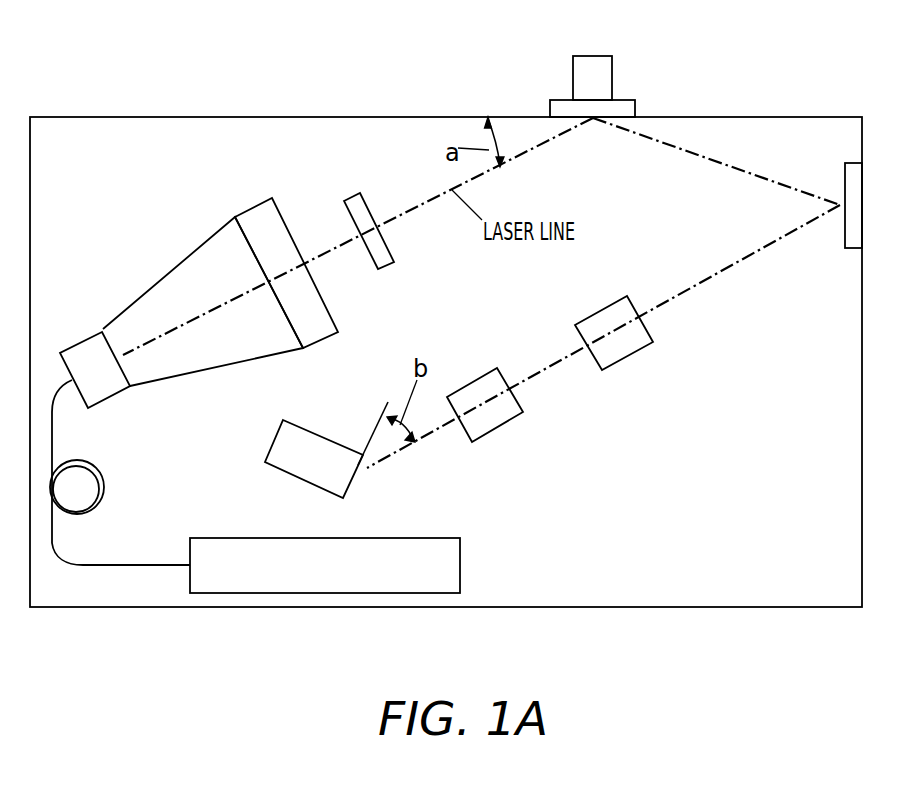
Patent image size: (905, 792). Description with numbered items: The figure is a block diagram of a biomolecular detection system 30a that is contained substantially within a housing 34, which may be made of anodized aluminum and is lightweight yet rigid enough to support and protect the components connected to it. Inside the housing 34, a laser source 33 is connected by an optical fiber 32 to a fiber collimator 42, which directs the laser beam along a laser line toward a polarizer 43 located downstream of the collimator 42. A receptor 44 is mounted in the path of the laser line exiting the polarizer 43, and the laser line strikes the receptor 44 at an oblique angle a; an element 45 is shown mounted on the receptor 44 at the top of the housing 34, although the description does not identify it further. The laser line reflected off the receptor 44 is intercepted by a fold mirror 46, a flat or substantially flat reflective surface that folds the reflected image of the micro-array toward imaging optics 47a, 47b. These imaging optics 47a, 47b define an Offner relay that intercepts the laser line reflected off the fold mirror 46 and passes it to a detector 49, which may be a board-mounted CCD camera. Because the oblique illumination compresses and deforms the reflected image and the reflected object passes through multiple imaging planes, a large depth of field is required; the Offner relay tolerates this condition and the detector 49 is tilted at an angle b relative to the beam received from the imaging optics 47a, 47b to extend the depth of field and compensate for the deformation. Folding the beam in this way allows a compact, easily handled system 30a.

The biomolecular detection system 30a is at (212, 630).
The optical fiber 32 is at (130, 563).
The laser source 33 is at (460, 566).
The housing 34 is at (282, 117).
The fiber collimator 42 is at (215, 368).
The polarizer 43 is at (388, 265).
The receptor 44 is at (550, 108).
The detector 45 is at (612, 77).
The fold mirror 46 is at (855, 248).
The imaging optics 47a is at (628, 357).
The imaging optics 47b is at (498, 430).
The detector 49 is at (325, 437).